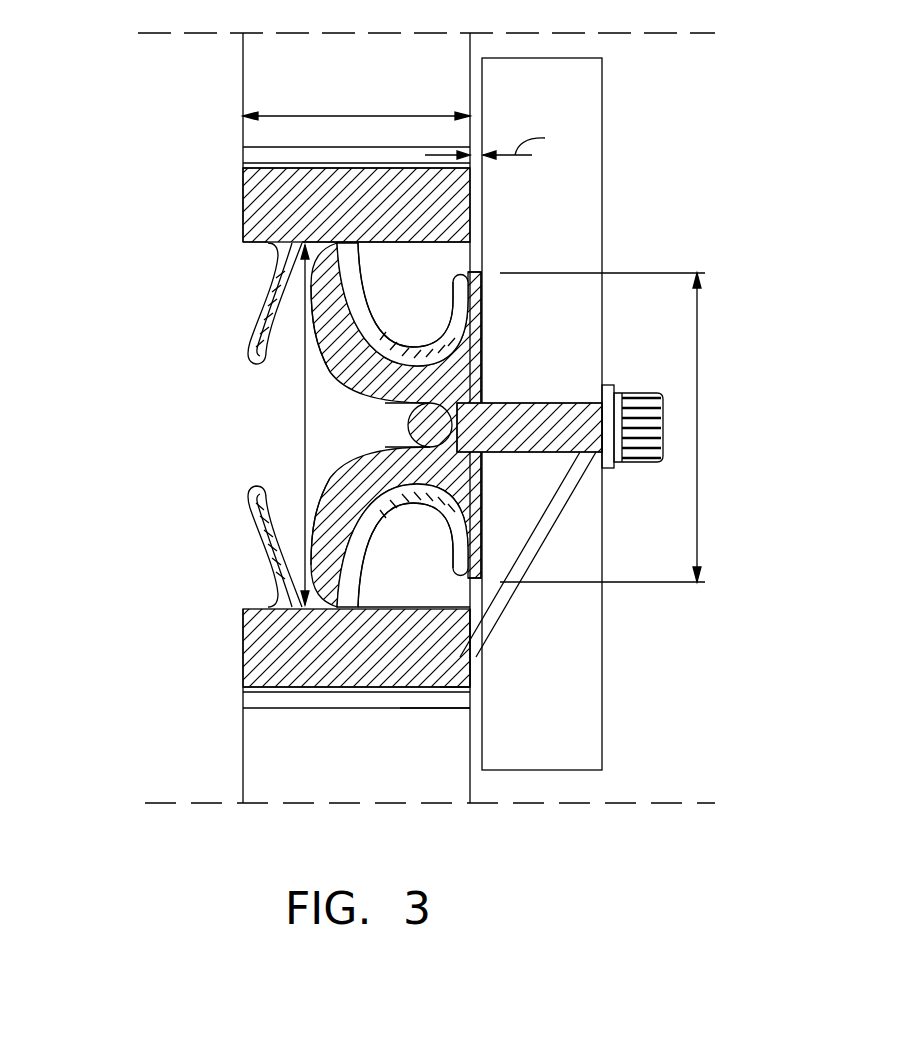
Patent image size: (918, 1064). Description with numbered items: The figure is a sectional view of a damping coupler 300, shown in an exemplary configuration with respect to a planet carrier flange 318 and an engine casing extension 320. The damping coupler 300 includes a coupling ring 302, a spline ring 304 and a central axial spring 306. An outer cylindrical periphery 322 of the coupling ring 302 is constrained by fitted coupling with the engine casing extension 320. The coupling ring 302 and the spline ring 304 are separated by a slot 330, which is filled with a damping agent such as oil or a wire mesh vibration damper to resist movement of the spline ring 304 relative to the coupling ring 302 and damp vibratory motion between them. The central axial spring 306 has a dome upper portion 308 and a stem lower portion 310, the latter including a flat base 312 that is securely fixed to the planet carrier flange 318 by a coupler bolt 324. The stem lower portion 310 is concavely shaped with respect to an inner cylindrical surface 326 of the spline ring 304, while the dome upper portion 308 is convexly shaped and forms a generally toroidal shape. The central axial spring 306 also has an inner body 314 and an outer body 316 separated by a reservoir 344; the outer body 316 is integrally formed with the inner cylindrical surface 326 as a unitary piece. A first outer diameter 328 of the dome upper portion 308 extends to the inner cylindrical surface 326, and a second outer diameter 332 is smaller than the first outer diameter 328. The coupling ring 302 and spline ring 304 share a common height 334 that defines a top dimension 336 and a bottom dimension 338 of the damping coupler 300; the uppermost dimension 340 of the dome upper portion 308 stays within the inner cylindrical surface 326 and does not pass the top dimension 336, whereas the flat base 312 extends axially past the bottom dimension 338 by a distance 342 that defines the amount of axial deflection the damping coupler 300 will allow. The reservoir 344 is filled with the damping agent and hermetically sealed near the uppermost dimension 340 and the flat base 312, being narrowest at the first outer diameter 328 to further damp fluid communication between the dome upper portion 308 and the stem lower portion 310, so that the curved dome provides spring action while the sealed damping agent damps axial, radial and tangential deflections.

The damping coupler 300 is at (240, 277).
The coupling ring 302 is at (260, 709).
The spline ring 304 is at (458, 245).
The central axial spring 306 is at (275, 389).
The dome upper portion 308 is at (250, 490).
The stem lower portion 310 is at (377, 402).
The flat base 312 is at (483, 325).
The inner body 314 is at (372, 273).
The outer body 316 is at (325, 345).
The planet carrier flange 318 is at (602, 169).
The engine casing extension 320 is at (418, 777).
The outer cylindrical periphery 322 is at (368, 708).
The coupler bolt 324 is at (640, 466).
The inner cylindrical surface 326 is at (383, 608).
The first outer diameter 328 is at (302, 437).
The slot 330 is at (452, 683).
The second outer diameter 332 is at (698, 427).
The common height 334 is at (372, 116).
The top dimension 336 is at (243, 203).
The bottom dimension 338 is at (455, 200).
The uppermost dimension 340 is at (253, 350).
The distance 342 is at (508, 141).
The reservoir 344 is at (362, 297).